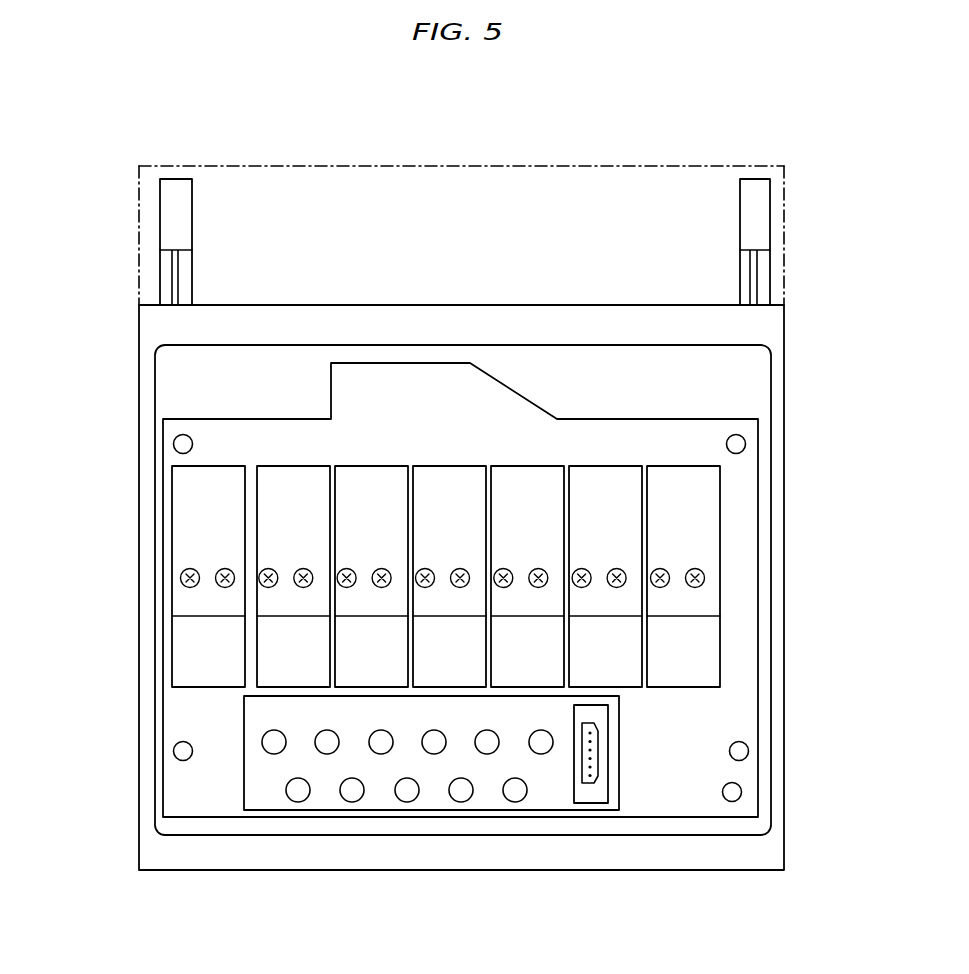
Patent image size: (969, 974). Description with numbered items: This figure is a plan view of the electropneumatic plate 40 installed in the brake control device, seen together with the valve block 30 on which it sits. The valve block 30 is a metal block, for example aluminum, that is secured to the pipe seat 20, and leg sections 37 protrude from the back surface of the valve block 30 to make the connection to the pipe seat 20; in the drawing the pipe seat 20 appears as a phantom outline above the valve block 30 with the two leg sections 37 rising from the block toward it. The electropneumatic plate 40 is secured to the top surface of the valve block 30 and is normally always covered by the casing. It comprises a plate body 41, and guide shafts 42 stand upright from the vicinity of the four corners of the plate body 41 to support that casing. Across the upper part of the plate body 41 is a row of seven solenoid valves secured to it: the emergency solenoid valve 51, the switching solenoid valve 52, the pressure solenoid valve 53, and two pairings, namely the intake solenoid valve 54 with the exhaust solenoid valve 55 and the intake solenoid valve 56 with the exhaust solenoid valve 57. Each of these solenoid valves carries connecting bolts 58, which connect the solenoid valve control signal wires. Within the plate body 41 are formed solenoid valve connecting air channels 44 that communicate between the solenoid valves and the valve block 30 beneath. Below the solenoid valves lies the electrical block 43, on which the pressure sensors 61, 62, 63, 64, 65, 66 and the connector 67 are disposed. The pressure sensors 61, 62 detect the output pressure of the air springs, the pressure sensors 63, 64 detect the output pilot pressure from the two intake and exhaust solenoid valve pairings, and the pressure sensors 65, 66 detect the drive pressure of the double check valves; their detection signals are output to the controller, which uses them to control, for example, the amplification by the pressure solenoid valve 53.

The pipe seat 20 is at (684, 165).
The valve block 30 is at (787, 339).
The leg sections 37 is at (165, 233).
The electropneumatic plate 40 is at (163, 341).
The plate body 41 is at (750, 659).
The guide shafts 42 is at (173, 445).
The solenoid valve connecting air channels 44 is at (742, 791).
The emergency solenoid valve 51 is at (447, 478).
The switching solenoid valve 52 is at (380, 478).
The pressure solenoid valve 53 is at (677, 468).
The intake solenoid valve 54 is at (288, 472).
The exhaust solenoid valve 55 is at (205, 467).
The intake solenoid valve 56 is at (522, 468).
The exhaust solenoid valve 57 is at (600, 468).
The connecting bolts 58 is at (180, 580).
The electrical block 43 is at (556, 798).
The pressure sensor 61 is at (487, 754).
The pressure sensor 62 is at (541, 754).
The pressure sensor 63 is at (274, 754).
The pressure sensor 64 is at (327, 754).
The pressure sensor 65 is at (381, 754).
The pressure sensor 66 is at (434, 754).
The connector 67 is at (590, 790).